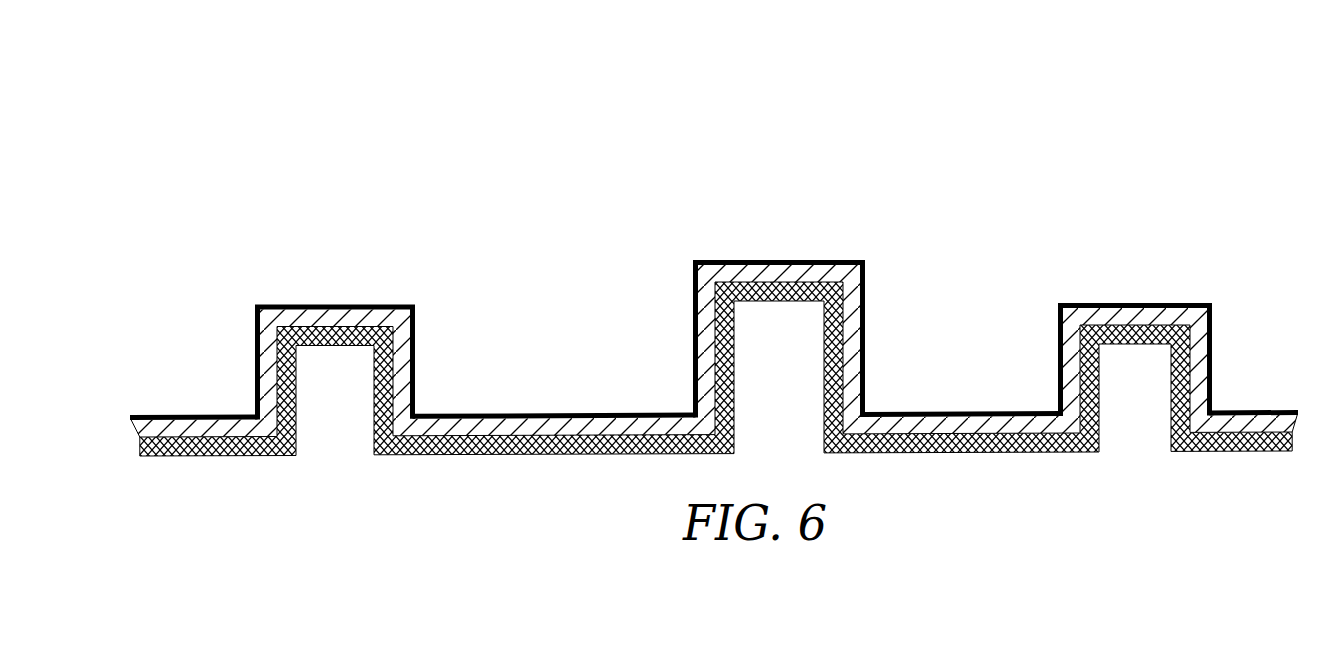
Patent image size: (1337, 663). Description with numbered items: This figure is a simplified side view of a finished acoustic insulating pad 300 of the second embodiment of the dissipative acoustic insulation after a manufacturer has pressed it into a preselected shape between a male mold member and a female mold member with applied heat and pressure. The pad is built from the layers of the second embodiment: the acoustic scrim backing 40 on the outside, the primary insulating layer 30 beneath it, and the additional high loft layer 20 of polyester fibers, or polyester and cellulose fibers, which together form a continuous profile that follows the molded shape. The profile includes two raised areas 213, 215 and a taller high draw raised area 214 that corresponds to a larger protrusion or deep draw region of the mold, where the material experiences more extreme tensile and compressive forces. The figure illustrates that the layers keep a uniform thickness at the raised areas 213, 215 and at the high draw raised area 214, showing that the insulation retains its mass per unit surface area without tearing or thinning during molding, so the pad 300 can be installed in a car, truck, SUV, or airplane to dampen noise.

The acoustic insulating pad 300 is at (1068, 115).
The raised area 213 is at (272, 263).
The high draw raised area 214 is at (847, 210).
The raised area 215 is at (1193, 262).
The acoustic scrim backing 40 is at (530, 412).
The primary insulating layer 30 is at (163, 458).
The high loft layer 20 is at (1008, 443).